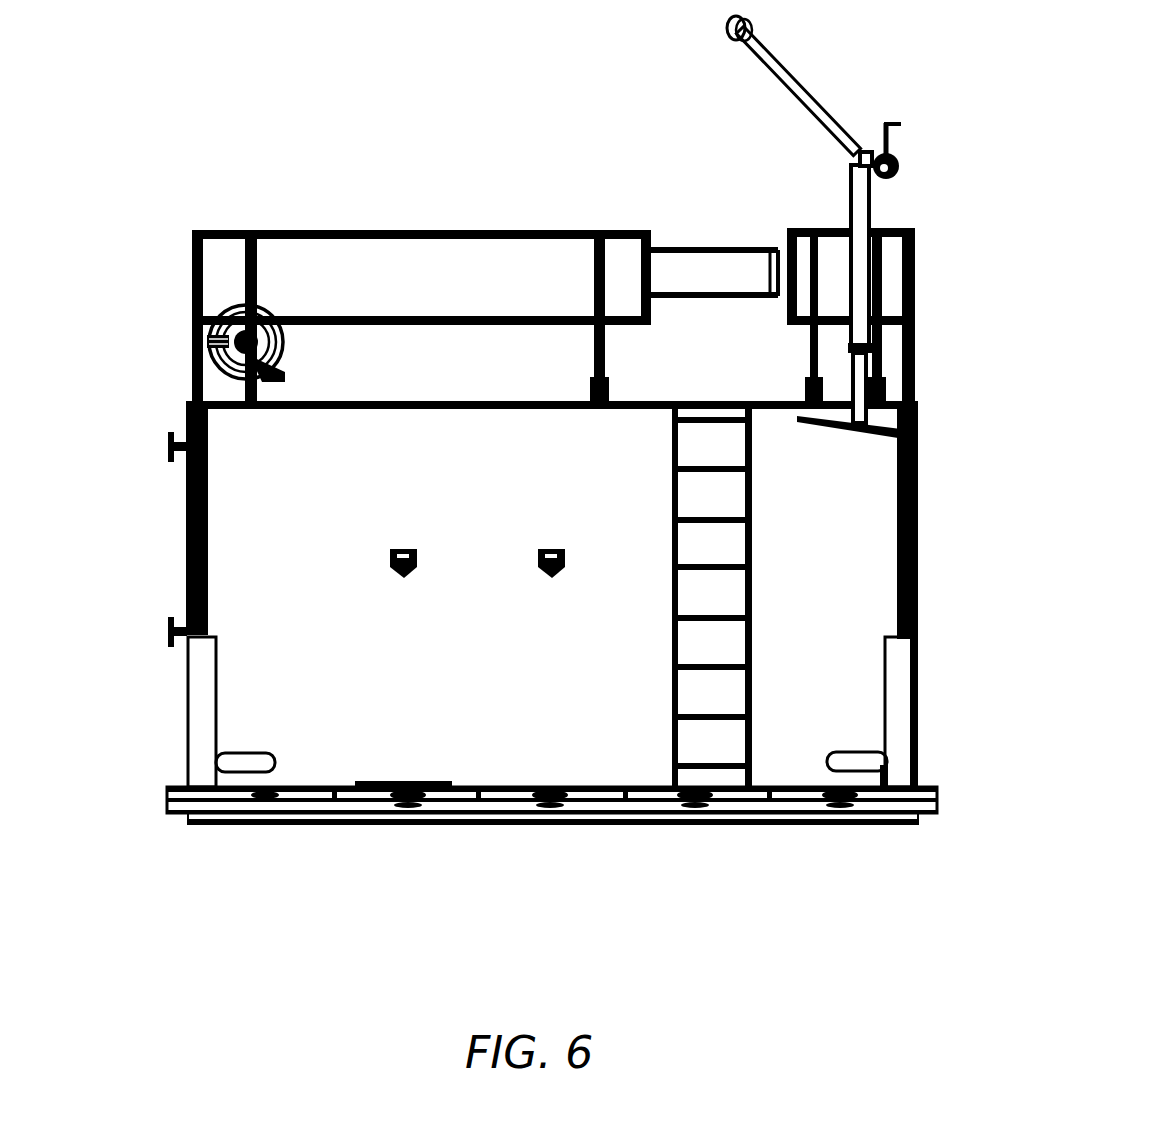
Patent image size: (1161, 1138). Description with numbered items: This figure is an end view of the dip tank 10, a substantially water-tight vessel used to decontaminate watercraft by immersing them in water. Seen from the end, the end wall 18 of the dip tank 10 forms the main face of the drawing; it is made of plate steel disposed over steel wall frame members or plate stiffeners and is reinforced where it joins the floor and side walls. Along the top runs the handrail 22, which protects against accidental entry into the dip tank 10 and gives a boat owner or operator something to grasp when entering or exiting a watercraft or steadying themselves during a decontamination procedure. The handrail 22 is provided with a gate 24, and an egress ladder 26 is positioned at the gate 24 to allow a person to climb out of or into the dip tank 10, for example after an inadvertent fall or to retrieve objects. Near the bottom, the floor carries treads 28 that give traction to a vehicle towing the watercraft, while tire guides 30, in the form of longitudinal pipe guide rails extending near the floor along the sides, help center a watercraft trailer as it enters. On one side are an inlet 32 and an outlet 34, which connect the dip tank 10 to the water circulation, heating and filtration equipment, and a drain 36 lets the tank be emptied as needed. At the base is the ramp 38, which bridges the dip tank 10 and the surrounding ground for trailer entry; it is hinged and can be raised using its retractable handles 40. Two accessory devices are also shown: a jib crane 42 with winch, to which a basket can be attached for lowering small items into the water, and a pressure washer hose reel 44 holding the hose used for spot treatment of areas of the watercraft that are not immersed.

The dip tank 10 is at (383, 62).
The end wall 18 is at (503, 526).
The handrail 22 is at (383, 230).
The gate 24 is at (717, 247).
The egress ladder 26 is at (670, 555).
The treads 28 is at (398, 782).
The tire guides 30 is at (243, 757).
The inlet 32 is at (170, 625).
The outlet 34 is at (170, 453).
The drain 36 is at (880, 773).
The ramp 38 is at (457, 794).
The handles 40 is at (698, 793).
The jib crane 42 is at (757, 36).
The pressure washer hose reel 44 is at (193, 327).